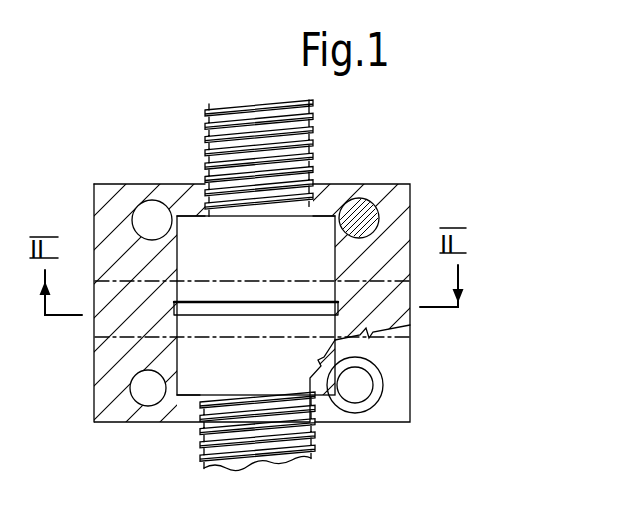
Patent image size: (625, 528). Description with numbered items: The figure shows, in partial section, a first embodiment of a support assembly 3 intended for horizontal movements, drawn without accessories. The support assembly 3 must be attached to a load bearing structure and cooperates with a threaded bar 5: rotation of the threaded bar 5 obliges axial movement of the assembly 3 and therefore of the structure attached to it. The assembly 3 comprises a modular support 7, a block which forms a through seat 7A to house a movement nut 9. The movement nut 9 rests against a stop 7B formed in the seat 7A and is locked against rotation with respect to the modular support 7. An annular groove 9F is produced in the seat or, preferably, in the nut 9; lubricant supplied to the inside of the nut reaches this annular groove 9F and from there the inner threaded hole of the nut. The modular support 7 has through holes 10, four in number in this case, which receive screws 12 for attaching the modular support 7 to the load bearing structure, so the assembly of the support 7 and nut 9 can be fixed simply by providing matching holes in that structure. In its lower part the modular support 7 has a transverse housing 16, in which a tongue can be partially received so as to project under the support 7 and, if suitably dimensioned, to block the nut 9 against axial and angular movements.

The support assembly 3 is at (312, 280).
The threaded bar 5 is at (312, 131).
The modular support 7 is at (142, 196).
The through seat 7A is at (180, 404).
The stop 7B is at (191, 222).
The movement nut 9 is at (227, 372).
The annular groove 9F is at (290, 308).
The through holes 10 is at (138, 390).
The screws 12 is at (364, 200).
The transverse housing 16 is at (105, 334).